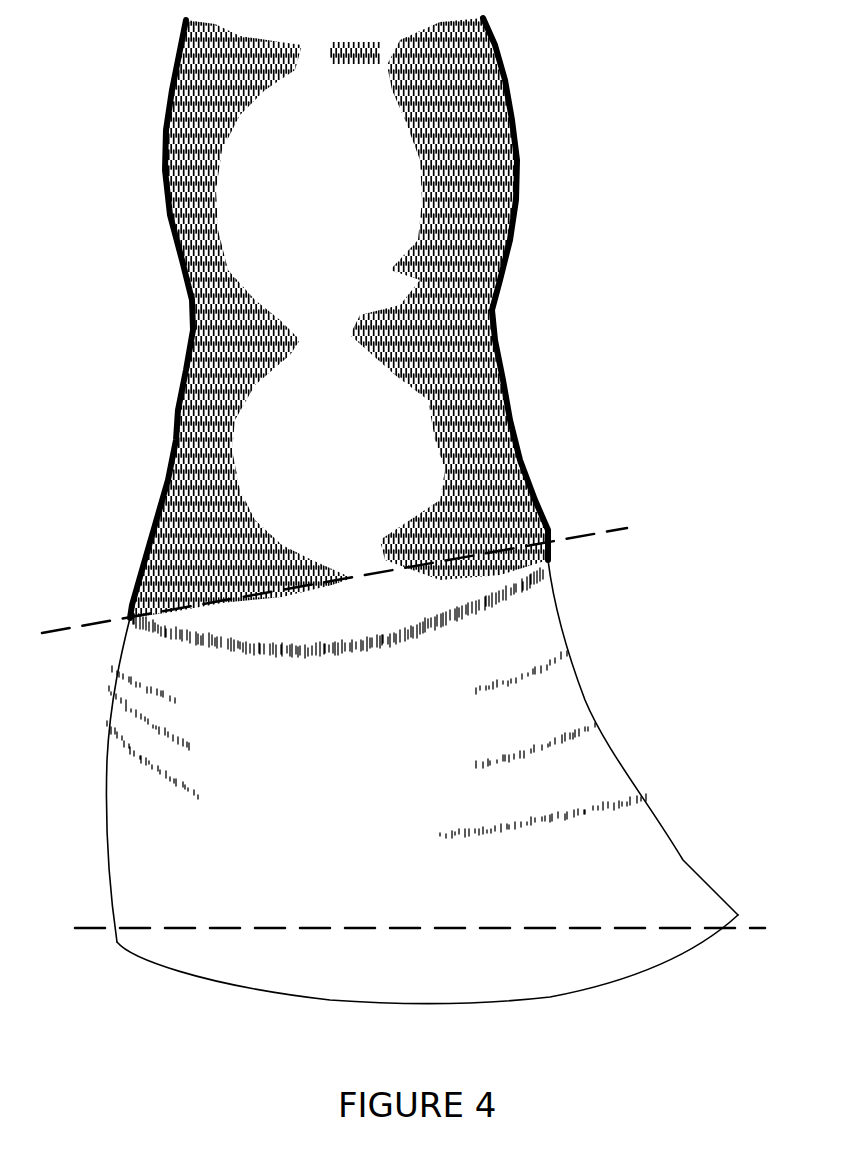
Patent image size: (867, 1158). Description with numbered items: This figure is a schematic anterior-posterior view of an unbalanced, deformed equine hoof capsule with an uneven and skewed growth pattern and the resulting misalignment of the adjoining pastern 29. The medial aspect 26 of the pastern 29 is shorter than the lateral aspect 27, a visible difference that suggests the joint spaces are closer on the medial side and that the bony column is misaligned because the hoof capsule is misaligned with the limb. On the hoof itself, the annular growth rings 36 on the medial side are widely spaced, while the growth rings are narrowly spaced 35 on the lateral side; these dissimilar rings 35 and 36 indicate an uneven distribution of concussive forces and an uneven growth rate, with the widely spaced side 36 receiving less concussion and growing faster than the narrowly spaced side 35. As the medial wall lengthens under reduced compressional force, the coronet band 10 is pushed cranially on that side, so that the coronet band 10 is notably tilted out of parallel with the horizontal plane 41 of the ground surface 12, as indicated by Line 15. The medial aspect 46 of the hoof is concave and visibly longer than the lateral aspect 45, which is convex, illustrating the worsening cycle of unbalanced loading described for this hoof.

The coronet band 10 is at (553, 525).
The ground surface 12 is at (629, 996).
The line 15 is at (335, 589).
The medial aspect of the pastern 26 is at (529, 420).
The lateral aspect of the pastern 27 is at (156, 473).
The pastern 29 is at (286, 443).
The narrowly spaced growth rings 35 is at (108, 724).
The widely spaced annular growth rings 36 is at (647, 800).
The horizontal plane 41 is at (427, 920).
The lateral aspect of the hoof 45 is at (83, 788).
The medial aspect of the hoof 46 is at (676, 834).